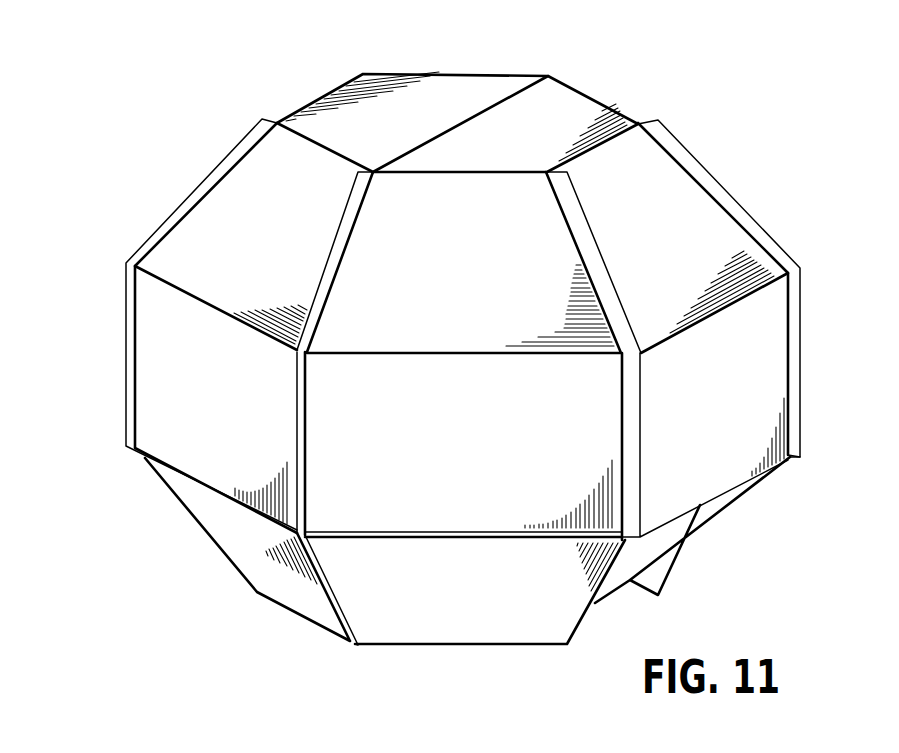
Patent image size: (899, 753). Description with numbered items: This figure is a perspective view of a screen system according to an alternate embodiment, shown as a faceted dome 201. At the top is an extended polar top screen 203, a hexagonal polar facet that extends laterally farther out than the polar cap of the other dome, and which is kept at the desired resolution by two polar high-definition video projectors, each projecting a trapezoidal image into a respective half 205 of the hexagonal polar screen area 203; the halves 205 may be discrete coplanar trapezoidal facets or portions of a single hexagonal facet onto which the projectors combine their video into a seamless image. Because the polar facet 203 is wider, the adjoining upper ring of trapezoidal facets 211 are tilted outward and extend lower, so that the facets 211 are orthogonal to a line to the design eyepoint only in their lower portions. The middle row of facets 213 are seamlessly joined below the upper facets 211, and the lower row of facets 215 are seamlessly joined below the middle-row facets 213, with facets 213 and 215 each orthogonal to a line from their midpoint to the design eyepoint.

The dome 201 is at (722, 121).
The extended polar top screen 203 is at (439, 92).
The half of the hexagonal polar screen area 205 is at (376, 97).
The upper ring of trapezoidal facets 211 is at (242, 228).
The middle row of facets 213 is at (152, 358).
The lower row of facets 215 is at (235, 540).